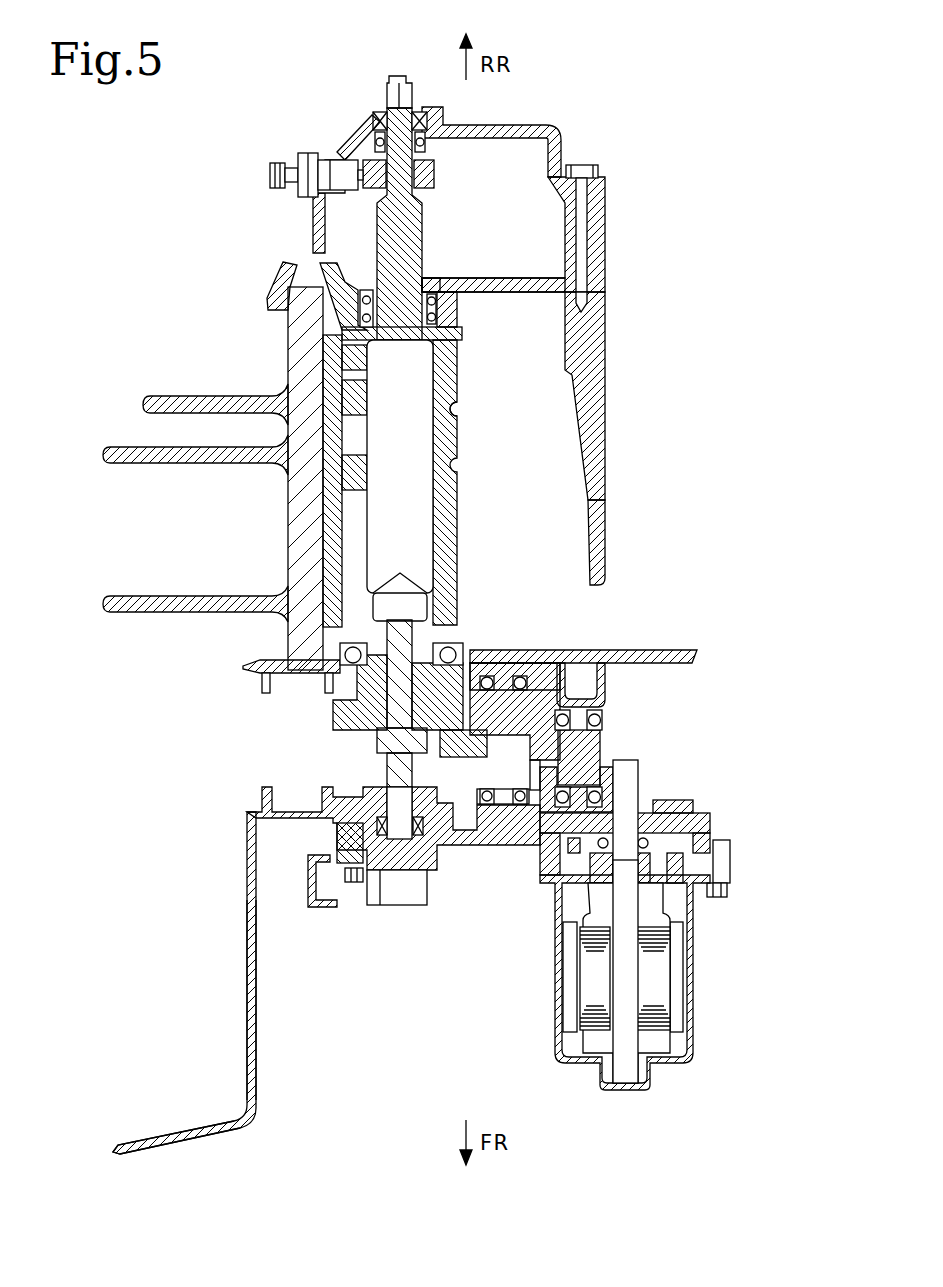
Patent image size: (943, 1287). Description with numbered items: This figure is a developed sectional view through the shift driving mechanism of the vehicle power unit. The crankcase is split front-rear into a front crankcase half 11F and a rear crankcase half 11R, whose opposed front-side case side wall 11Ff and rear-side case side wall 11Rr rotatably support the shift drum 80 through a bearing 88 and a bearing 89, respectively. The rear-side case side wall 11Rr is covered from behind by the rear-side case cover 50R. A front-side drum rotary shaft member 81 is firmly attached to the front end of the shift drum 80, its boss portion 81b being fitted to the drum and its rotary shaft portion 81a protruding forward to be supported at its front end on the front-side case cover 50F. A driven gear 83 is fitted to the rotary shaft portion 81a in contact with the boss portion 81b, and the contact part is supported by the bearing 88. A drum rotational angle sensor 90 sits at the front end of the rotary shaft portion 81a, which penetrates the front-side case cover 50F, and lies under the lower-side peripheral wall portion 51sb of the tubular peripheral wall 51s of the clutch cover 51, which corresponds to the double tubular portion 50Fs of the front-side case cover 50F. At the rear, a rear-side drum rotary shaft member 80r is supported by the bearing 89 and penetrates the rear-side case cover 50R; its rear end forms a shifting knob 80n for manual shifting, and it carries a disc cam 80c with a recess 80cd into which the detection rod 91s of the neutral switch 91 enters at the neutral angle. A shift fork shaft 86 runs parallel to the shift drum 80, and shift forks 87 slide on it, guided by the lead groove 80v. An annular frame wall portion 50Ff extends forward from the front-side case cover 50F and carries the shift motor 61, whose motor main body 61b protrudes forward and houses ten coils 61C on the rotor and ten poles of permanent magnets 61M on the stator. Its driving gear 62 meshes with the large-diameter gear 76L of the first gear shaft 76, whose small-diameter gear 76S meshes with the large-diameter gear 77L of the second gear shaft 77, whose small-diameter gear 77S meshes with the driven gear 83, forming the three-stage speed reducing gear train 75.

The shifting knob 80n is at (388, 95).
The detection rod 91s is at (358, 160).
The neutral switch 91 is at (293, 157).
The rear-side case cover 50R is at (512, 125).
The recess 80cd is at (530, 170).
The disc cam 80c is at (364, 190).
The rear-side drum rotary shaft member 80r is at (422, 228).
The bearing 89 is at (433, 290).
The shift fork shaft 86 is at (288, 340).
The shift forks 87 is at (195, 394).
The rear-side case side wall 11Rr is at (507, 293).
The lead groove 80v is at (532, 397).
The shift drum 80 is at (426, 445).
The rear crankcase half 11R is at (607, 447).
The front crankcase half 11F is at (610, 530).
The boss portion 81b is at (433, 625).
The rotary shaft portion 81a is at (387, 775).
The front-side drum rotary shaft member 81 is at (408, 688).
The speed reducing gear train 75 is at (502, 673).
The bearing 88 is at (472, 650).
The small-diameter gear 77S is at (523, 672).
The front-side case side wall 11Ff is at (590, 648).
The driven gear 83 is at (328, 712).
The first gear shaft 76 is at (583, 717).
The small-diameter gear 76S is at (603, 740).
The large-diameter gear 76L is at (603, 772).
The driving gear 62 is at (640, 786).
The annular frame wall portion 50Ff is at (707, 827).
The second gear shaft 77 is at (503, 778).
The large-diameter gear 77L is at (535, 762).
The double tubular portion 50Fs is at (257, 882).
The drum rotational angle sensor 90 is at (387, 906).
The front-side case cover 50F is at (453, 838).
The motor main body 61b is at (555, 973).
The permanent magnets 61M is at (682, 990).
The lower-side peripheral wall portion 51sb is at (257, 1020).
The tubular peripheral wall 51s is at (255, 983).
The coils 61C is at (595, 1032).
The shift motor 61 is at (634, 986).
The clutch cover 51 is at (178, 1141).